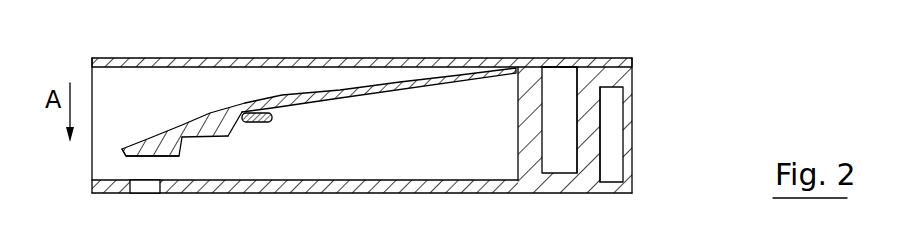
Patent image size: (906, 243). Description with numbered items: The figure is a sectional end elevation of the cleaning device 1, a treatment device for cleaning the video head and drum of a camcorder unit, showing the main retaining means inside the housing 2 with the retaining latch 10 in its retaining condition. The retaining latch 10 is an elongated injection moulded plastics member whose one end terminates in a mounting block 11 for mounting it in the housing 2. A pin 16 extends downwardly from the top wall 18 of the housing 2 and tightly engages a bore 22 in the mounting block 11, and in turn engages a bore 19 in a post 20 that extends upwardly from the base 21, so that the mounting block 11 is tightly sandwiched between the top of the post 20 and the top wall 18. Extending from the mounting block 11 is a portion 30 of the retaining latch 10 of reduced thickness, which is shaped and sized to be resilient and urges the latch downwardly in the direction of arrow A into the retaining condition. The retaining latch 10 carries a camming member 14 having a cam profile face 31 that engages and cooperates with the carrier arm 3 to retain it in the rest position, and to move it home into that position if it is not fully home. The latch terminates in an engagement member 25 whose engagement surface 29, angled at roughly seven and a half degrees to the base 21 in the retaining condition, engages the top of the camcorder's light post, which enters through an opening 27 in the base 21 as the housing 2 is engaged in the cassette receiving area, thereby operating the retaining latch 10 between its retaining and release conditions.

The cleaning device 1 is at (726, 77).
The housing 2 is at (389, 195).
The carrier arm 3 is at (273, 117).
The retaining latch 10 is at (195, 120).
The mounting block 11 is at (607, 68).
The camming member 14 is at (225, 123).
The pin 16 is at (563, 110).
The top wall 18 is at (387, 58).
The bore 19 is at (575, 128).
The post 20 is at (587, 173).
The base 21 is at (452, 190).
The bore 22 is at (555, 67).
The engagement member 25 is at (156, 145).
The opening 27 is at (148, 190).
The engagement surface 29 is at (148, 152).
The resilient portion 30 is at (310, 92).
The cam profile face 31 is at (234, 137).